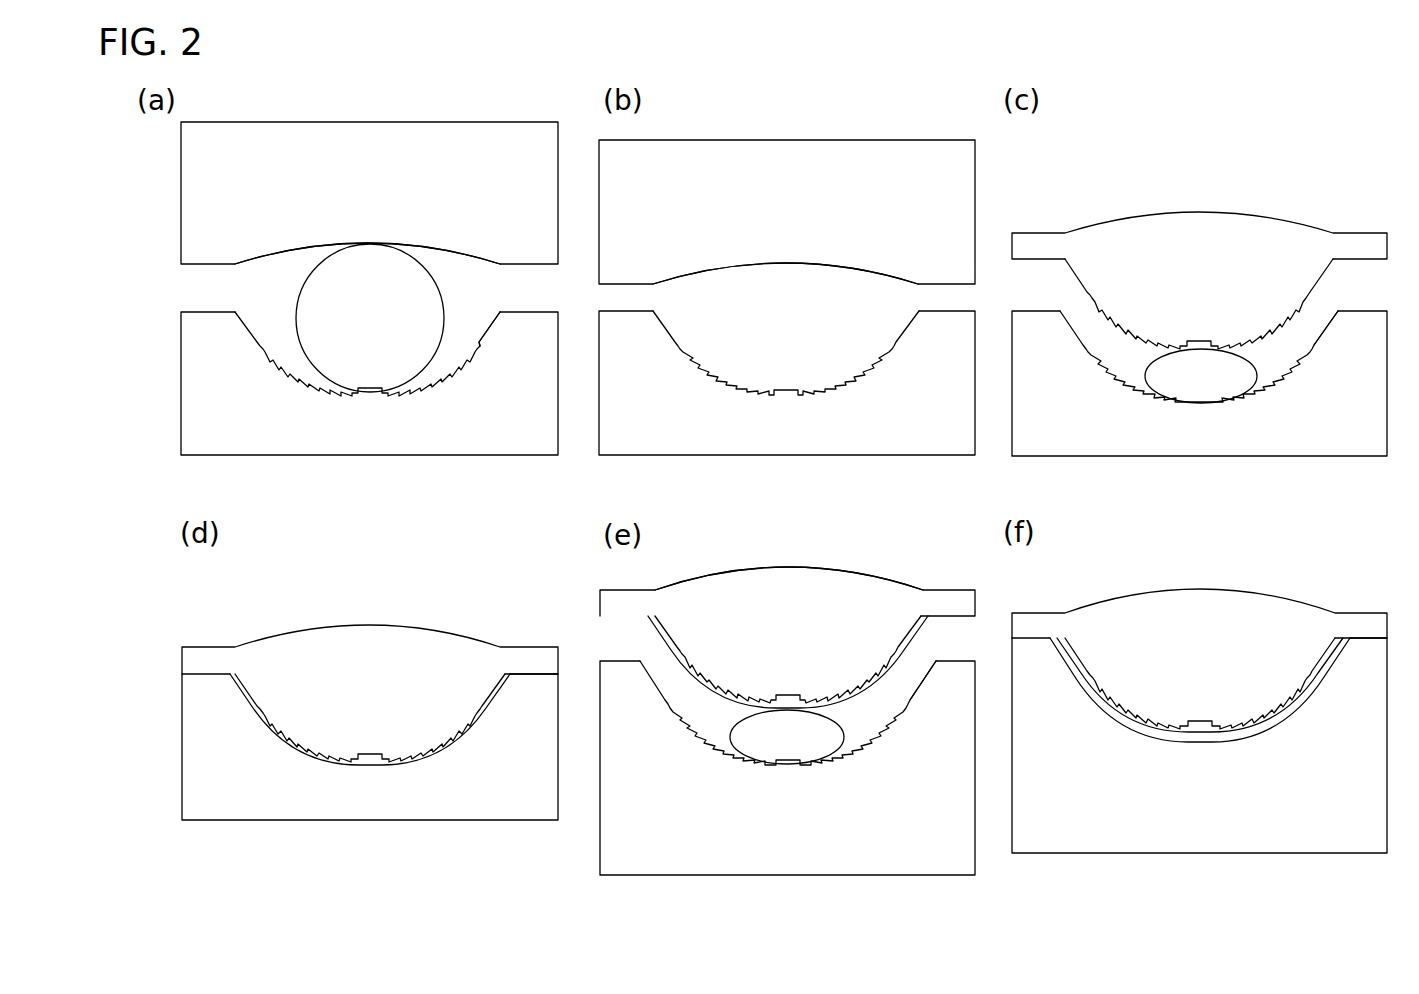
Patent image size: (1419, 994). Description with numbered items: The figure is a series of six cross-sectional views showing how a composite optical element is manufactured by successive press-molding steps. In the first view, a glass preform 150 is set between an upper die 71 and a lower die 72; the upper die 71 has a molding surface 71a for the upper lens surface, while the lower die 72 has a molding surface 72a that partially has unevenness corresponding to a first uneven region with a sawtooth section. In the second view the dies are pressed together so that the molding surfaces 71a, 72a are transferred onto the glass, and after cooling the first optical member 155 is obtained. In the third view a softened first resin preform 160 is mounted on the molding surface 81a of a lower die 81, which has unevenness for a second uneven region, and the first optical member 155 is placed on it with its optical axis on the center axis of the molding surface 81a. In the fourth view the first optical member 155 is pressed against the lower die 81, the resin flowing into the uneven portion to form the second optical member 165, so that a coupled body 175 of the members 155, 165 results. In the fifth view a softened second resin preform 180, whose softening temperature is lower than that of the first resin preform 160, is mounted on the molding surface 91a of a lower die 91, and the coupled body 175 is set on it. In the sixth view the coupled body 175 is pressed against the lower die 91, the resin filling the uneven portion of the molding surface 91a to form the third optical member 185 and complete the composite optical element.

The upper die 71 is at (262, 124).
The molding surface of upper die 71a is at (457, 253).
The lower die 72 is at (237, 457).
The molding surface of lower die 72a is at (478, 342).
The glass preform 150 is at (301, 293).
The first optical member 155 is at (693, 281).
The first resin preform 160 is at (1197, 396).
The lower die 81 is at (1121, 457).
The molding surface of lower die 81a is at (1323, 332).
The second optical member 165 is at (368, 762).
The coupled body 175 is at (930, 531).
The second resin preform 180 is at (790, 770).
The lower die 91 is at (607, 846).
The molding surface of lower die 91a is at (918, 665).
The third optical member 185 is at (1167, 736).